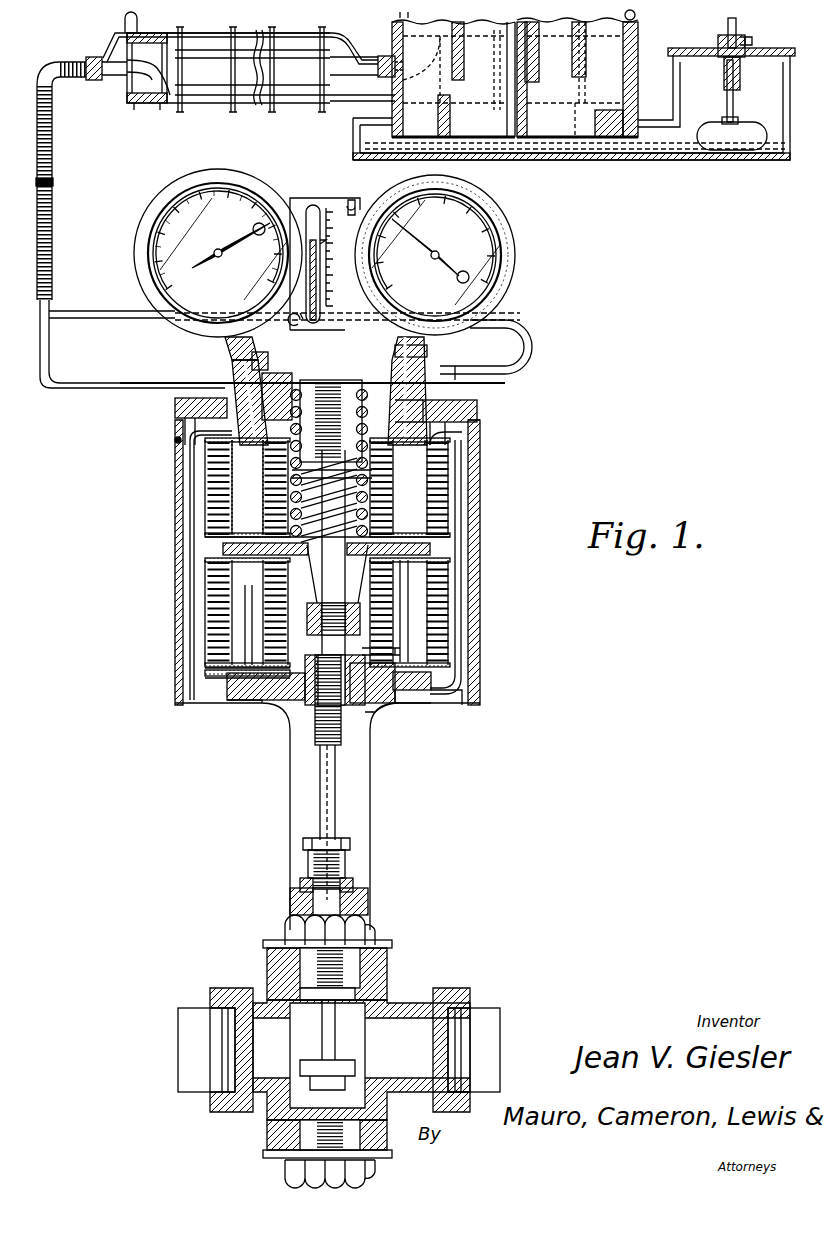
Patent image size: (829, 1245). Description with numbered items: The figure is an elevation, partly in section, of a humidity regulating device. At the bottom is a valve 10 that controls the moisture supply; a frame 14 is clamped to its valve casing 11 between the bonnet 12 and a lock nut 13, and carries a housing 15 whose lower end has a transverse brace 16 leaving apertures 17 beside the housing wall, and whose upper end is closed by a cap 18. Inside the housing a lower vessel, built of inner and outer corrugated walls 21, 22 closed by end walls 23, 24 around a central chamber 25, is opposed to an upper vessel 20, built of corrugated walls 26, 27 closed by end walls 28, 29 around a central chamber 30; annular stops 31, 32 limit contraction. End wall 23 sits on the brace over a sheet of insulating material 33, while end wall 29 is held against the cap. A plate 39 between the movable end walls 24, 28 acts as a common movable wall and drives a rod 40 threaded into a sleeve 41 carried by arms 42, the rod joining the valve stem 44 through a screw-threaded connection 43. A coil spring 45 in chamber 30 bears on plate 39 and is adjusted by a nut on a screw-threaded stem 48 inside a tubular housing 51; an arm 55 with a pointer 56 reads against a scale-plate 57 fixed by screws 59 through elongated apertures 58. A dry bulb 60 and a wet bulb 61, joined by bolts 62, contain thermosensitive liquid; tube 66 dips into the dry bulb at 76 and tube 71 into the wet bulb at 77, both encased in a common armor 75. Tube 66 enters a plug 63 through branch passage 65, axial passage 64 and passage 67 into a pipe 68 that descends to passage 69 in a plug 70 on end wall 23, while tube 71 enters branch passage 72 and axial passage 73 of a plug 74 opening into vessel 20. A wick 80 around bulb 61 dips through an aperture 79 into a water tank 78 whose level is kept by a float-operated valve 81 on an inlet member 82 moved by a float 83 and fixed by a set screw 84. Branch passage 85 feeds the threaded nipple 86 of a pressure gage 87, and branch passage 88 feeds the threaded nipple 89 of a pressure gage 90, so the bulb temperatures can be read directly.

The valve 10 is at (345, 1030).
The valve casing 11 is at (358, 992).
The bonnet 12 is at (372, 940).
The lock nut 13 is at (352, 868).
The frame 14 is at (368, 790).
The housing 15 is at (473, 565).
The transverse brace or web 16 is at (275, 703).
The apertures 17 is at (190, 697).
The cap 18 is at (455, 411).
The expansible and collapsible vessel 20 is at (372, 485).
The inner corrugated flexible tubular wall 21 is at (268, 612).
The outer corrugated flexible tubular wall 22 is at (205, 605).
The end wall 23 is at (205, 671).
The end wall 24 is at (300, 556).
The inner central chamber 25 is at (410, 652).
The inner corrugated flexible tubular wall 26 is at (215, 483).
The outer corrugated flexible tubular wall 27 is at (215, 505).
The annular end wall 28 is at (215, 548).
The annular end wall 29 is at (205, 452).
The central axial chamber 30 is at (455, 470).
The annular stop 31 is at (410, 612).
The annular stop 32 is at (412, 538).
The sheet of insulating material 33 is at (420, 672).
The plate or member 39 is at (468, 548).
The rod 40 is at (320, 745).
The sleeve 41 is at (238, 708).
The arms 42 is at (303, 575).
The screw-threaded connection 43 is at (318, 775).
The valve stem 44 is at (336, 812).
The coil spring 45 is at (176, 440).
The screw-threaded stem 48 is at (356, 438).
The tubular housing 51 is at (452, 385).
The arm 55 is at (320, 308).
The pointer 56 is at (316, 205).
The scale-plate 57 is at (328, 196).
The elongated apertures 58 is at (352, 200).
The screws 59 is at (395, 200).
The dry bulb 60 is at (206, 96).
The wet bulb 61 is at (552, 152).
The bolts 62 is at (346, 103).
The plug 63 is at (460, 428).
The axially-extending passage 64 is at (468, 397).
The branch passage 65 is at (425, 372).
The tube 66 is at (100, 311).
The passage 67 is at (458, 450).
The pipe 68 is at (462, 580).
The passage 69 is at (440, 708).
The plug 70 is at (403, 710).
The tube 71 is at (336, 32).
The branch passage 72 is at (235, 390).
The axial passage 73 is at (176, 400).
The plug 74 is at (282, 382).
The common armor 75 is at (55, 222).
The tube end projection 76 is at (155, 82).
The tube end projection 77 is at (455, 72).
The water tank 78 is at (630, 160).
The aperture 79 is at (650, 120).
The wick 80 is at (608, 60).
The float-operated valve 81 is at (727, 88).
The tubular inlet member 82 is at (722, 58).
The float 83 is at (738, 148).
The set screw 84 is at (748, 44).
The branch passage 85 is at (330, 385).
The threaded nipple 86 is at (523, 348).
The pressure gage 87 is at (512, 255).
The branch passage 88 is at (270, 362).
The threaded nipple 89 is at (205, 333).
The pressure gage 90 is at (198, 190).